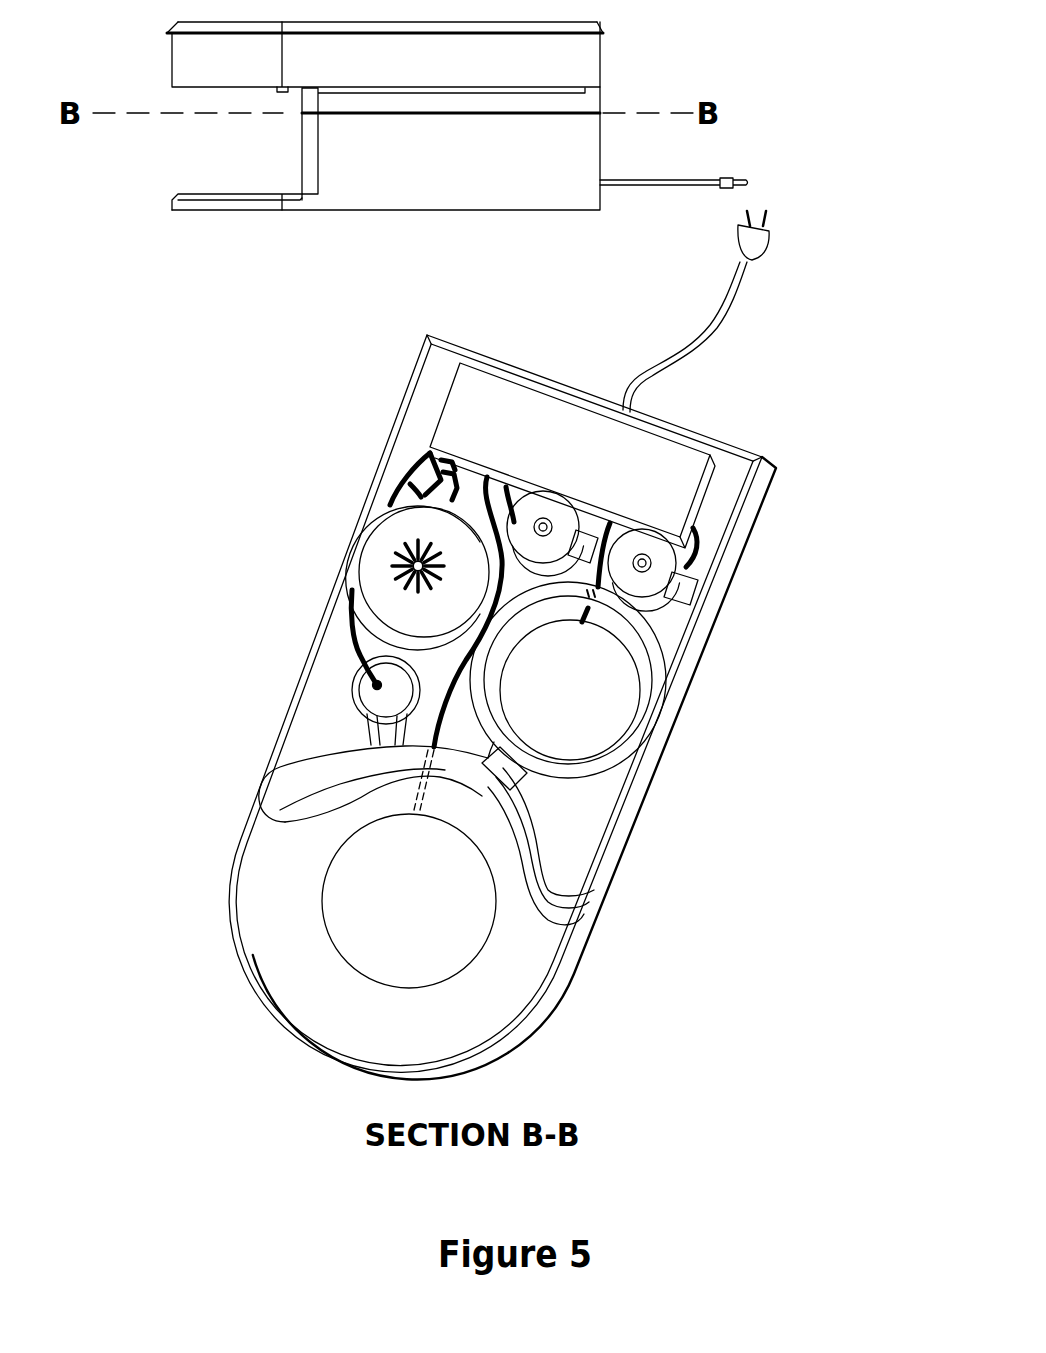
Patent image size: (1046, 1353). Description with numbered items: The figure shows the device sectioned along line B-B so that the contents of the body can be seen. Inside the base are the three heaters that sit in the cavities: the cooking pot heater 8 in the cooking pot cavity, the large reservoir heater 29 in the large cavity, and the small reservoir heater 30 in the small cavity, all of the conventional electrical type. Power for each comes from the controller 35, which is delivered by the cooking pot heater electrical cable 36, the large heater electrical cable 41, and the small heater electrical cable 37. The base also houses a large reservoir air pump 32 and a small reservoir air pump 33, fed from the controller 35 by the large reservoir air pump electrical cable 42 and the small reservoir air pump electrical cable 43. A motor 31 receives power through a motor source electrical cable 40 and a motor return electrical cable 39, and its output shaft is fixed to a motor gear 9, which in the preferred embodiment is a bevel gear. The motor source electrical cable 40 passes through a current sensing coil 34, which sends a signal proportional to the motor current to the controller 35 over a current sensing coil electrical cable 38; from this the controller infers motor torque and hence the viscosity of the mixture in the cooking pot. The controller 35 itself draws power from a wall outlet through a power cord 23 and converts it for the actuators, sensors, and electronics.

The cooking pot heater 8 is at (456, 936).
The motor gear 9 is at (410, 568).
The power cord 23 is at (723, 315).
The large reservoir heater 29 is at (613, 697).
The small reservoir heater 30 is at (388, 702).
The motor 31 is at (373, 557).
The large reservoir air pump 32 is at (660, 580).
The small reservoir air pump 33 is at (545, 493).
The current sensing coil 34 is at (420, 497).
The controller 35 is at (657, 467).
The cooking pot heater electrical cable 36 is at (487, 473).
The small heater electrical cable 37 is at (440, 492).
The current sensing coil electrical cable 38 is at (438, 457).
The motor return electrical cable 39 is at (432, 455).
The motor source electrical cable 40 is at (450, 473).
The large heater electrical cable 41 is at (662, 628).
The large reservoir air pump electrical cable 42 is at (705, 537).
The small reservoir air pump electrical cable 43 is at (540, 497).